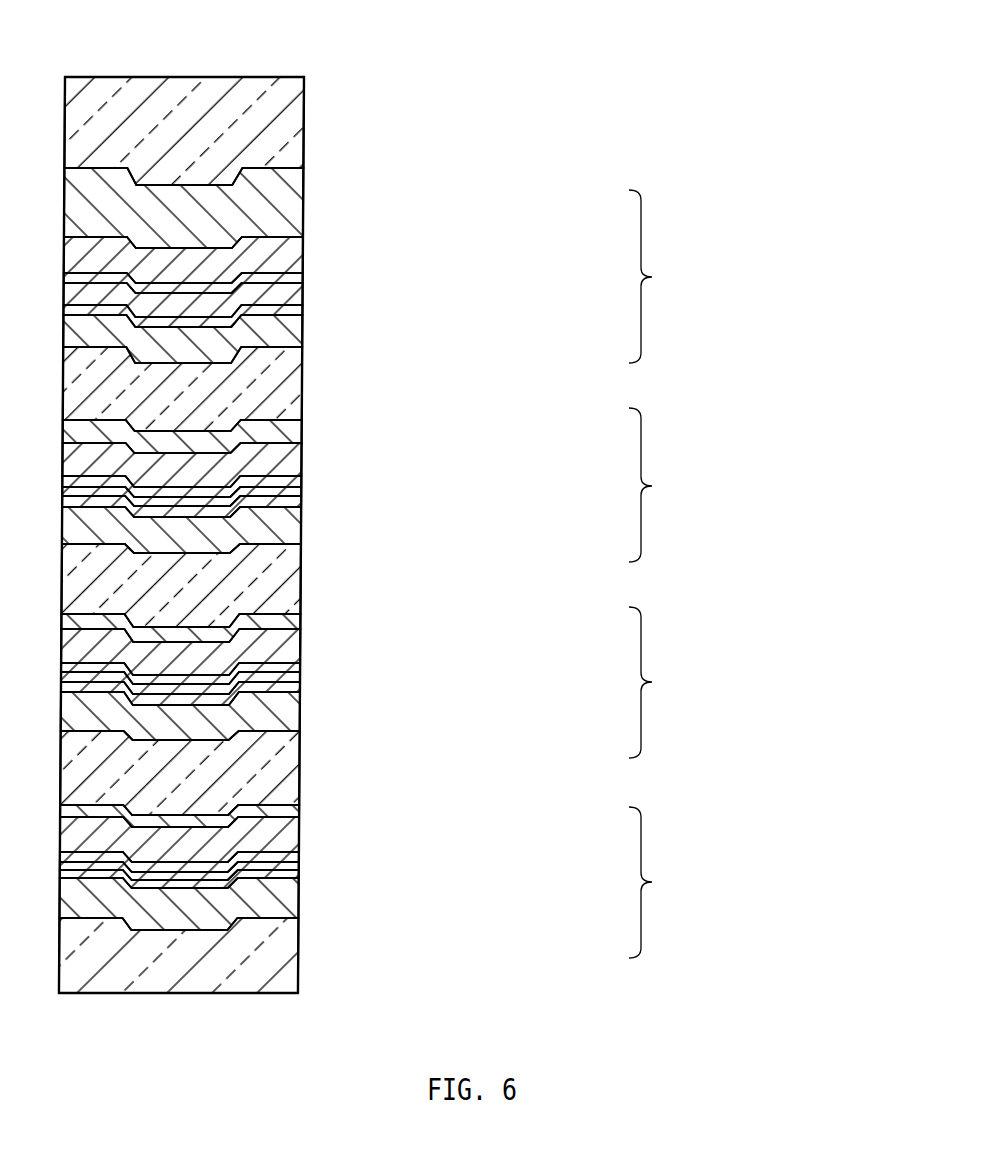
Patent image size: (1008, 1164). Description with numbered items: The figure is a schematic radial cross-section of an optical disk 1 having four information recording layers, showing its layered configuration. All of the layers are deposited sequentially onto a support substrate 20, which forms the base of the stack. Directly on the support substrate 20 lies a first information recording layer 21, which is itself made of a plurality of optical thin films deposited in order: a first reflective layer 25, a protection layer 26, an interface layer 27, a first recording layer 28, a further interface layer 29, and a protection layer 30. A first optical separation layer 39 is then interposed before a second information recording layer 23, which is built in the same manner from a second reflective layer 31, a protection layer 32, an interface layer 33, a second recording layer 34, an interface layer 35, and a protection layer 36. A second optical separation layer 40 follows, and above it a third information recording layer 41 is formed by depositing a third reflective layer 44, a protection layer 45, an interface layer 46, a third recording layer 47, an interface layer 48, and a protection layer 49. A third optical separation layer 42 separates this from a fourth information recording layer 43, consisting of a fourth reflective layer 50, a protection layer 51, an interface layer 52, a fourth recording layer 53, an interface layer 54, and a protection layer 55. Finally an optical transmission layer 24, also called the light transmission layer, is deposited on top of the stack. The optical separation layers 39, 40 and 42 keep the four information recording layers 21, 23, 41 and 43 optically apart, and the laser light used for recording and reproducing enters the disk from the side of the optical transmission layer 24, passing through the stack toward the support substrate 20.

The Optical Disk 1 is at (372, 85).
The support substrate 20 is at (303, 152).
The first reflective layer 25 is at (303, 215).
The protection layer 26 is at (303, 258).
The interface layer 27 is at (303, 278).
The first recording layer 28 is at (303, 292).
The interface layer 29 is at (303, 311).
The protection layer 30 is at (302, 332).
The first information recording layer 21 is at (753, 276).
The first optical separation layer 39 is at (302, 386).
The second reflective layer 31 is at (302, 433).
The protection layer 32 is at (302, 463).
The interface layer 33 is at (302, 483).
The second recording layer 34 is at (302, 491).
The interface layer 35 is at (301, 502).
The protection layer 36 is at (301, 525).
The second information recording layer 23 is at (758, 485).
The second optical separation layer 40 is at (301, 573).
The third reflective layer 44 is at (301, 627).
The protection layer 45 is at (300, 653).
The interface layer 46 is at (300, 669).
The third recording layer 47 is at (300, 679).
The interface layer 48 is at (300, 689).
The protection layer 49 is at (300, 715).
The third information recording layer 41 is at (753, 682).
The third optical separation layer 42 is at (300, 763).
The fourth reflective layer 50 is at (299, 811).
The protection layer 51 is at (299, 837).
The interface layer 52 is at (299, 858).
The fourth recording layer 53 is at (299, 866).
The interface layer 54 is at (299, 875).
The protection layer 55 is at (299, 905).
The fourth information recording layer 43 is at (758, 882).
The optical transmission layer 24 is at (299, 955).